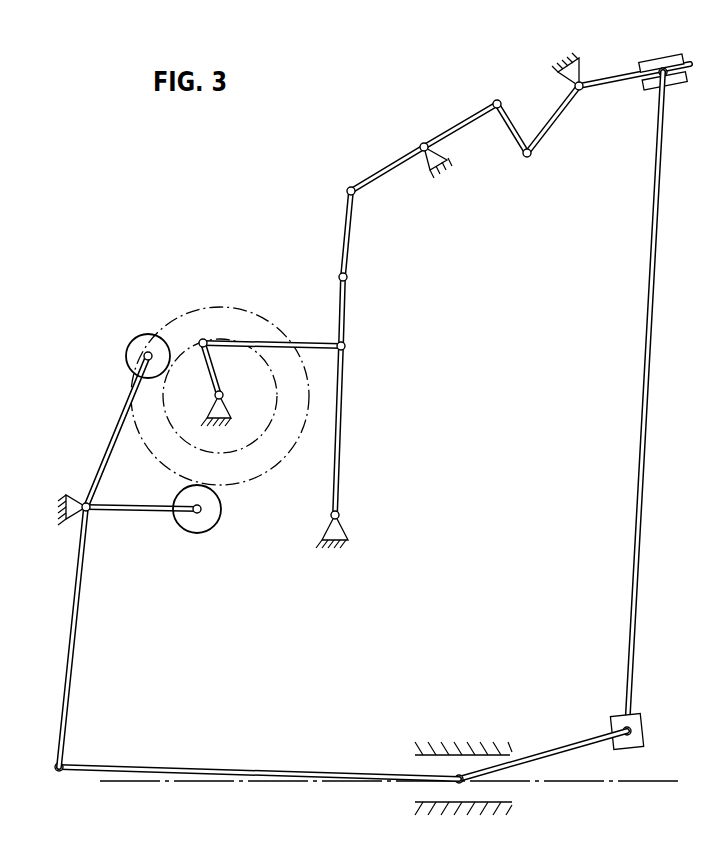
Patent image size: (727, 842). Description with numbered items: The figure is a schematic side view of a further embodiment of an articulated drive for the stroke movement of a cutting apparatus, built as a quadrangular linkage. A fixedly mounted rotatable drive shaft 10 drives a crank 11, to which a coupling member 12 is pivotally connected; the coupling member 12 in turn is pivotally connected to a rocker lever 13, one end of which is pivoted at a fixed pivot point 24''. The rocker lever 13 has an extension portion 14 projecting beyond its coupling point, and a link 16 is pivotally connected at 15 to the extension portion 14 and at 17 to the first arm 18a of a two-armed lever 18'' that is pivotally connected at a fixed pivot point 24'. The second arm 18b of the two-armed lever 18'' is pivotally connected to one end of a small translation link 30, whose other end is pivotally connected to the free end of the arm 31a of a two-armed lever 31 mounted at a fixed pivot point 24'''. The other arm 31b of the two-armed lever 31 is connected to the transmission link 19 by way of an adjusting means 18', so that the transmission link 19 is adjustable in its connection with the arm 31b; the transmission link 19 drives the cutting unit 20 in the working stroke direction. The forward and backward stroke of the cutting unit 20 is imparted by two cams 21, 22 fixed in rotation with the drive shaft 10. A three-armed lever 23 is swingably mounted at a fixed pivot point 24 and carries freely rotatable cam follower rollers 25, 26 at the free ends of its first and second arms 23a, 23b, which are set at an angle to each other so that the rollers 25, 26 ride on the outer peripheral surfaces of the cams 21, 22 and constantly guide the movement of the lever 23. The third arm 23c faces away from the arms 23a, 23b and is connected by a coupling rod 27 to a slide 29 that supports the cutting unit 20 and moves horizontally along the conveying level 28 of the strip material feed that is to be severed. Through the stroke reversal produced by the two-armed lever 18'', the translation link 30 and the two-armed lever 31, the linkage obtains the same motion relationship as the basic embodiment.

The drive shaft 10 is at (222, 393).
The crank 11 is at (208, 359).
The coupling member 12 is at (313, 345).
The rocker lever 13 is at (340, 430).
The extension portion 14 is at (344, 324).
The pivot connection 15 is at (346, 277).
The link 16 is at (350, 234).
The pivot connection 17 is at (349, 188).
The first arm 18a is at (389, 166).
The second arm 18b is at (464, 122).
The adjusting means 18' is at (665, 50).
The two-armed lever 18'' is at (421, 119).
The transmission link 19 is at (645, 458).
The cutting unit 20 is at (614, 730).
The cam 21 is at (270, 421).
The cam 22 is at (259, 475).
The three-armed lever 23 is at (108, 561).
The first arm 23a is at (117, 424).
The second arm 23b is at (160, 505).
The third arm 23c is at (76, 588).
The fixed pivot point 24 is at (74, 485).
The fixed pivot point 24' is at (428, 174).
The fixed pivot point 24'' is at (363, 529).
The fixed pivot point 24''' is at (577, 50).
The cam follower roller 25 is at (137, 339).
The cam follower roller 26 is at (211, 529).
The coupling rod 27 is at (243, 772).
The conveying level 28 is at (390, 802).
The slide 29 is at (459, 776).
The translation link 30 is at (514, 135).
The two-armed lever 31 is at (604, 94).
The arm 31a is at (547, 124).
The arm 31b is at (610, 78).